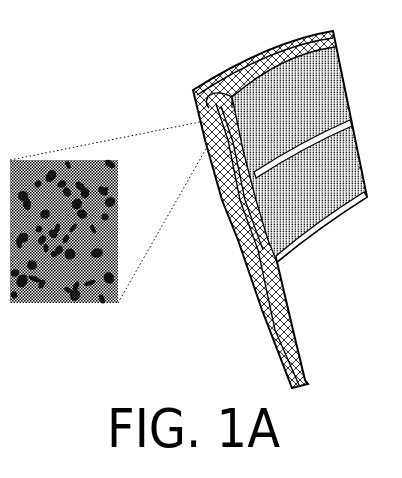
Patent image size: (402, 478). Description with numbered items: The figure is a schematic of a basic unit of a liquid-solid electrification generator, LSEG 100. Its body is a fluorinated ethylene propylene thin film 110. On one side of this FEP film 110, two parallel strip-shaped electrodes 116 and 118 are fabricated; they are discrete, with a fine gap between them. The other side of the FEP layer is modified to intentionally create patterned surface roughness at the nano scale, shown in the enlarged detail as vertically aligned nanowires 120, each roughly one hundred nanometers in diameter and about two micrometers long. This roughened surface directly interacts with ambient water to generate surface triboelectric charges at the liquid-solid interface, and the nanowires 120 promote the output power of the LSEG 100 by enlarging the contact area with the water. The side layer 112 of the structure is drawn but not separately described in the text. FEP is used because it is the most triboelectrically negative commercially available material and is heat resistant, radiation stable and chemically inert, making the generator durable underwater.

The liquid-solid electrification generator 100 is at (190, 68).
The fluorinated ethylene propylene thin film 110 is at (245, 61).
The spine / side wall layers 112 is at (238, 236).
The strip-shaped electrode 116 is at (340, 77).
The strip-shaped electrode 118 is at (355, 162).
The nanowires 120 is at (50, 166).